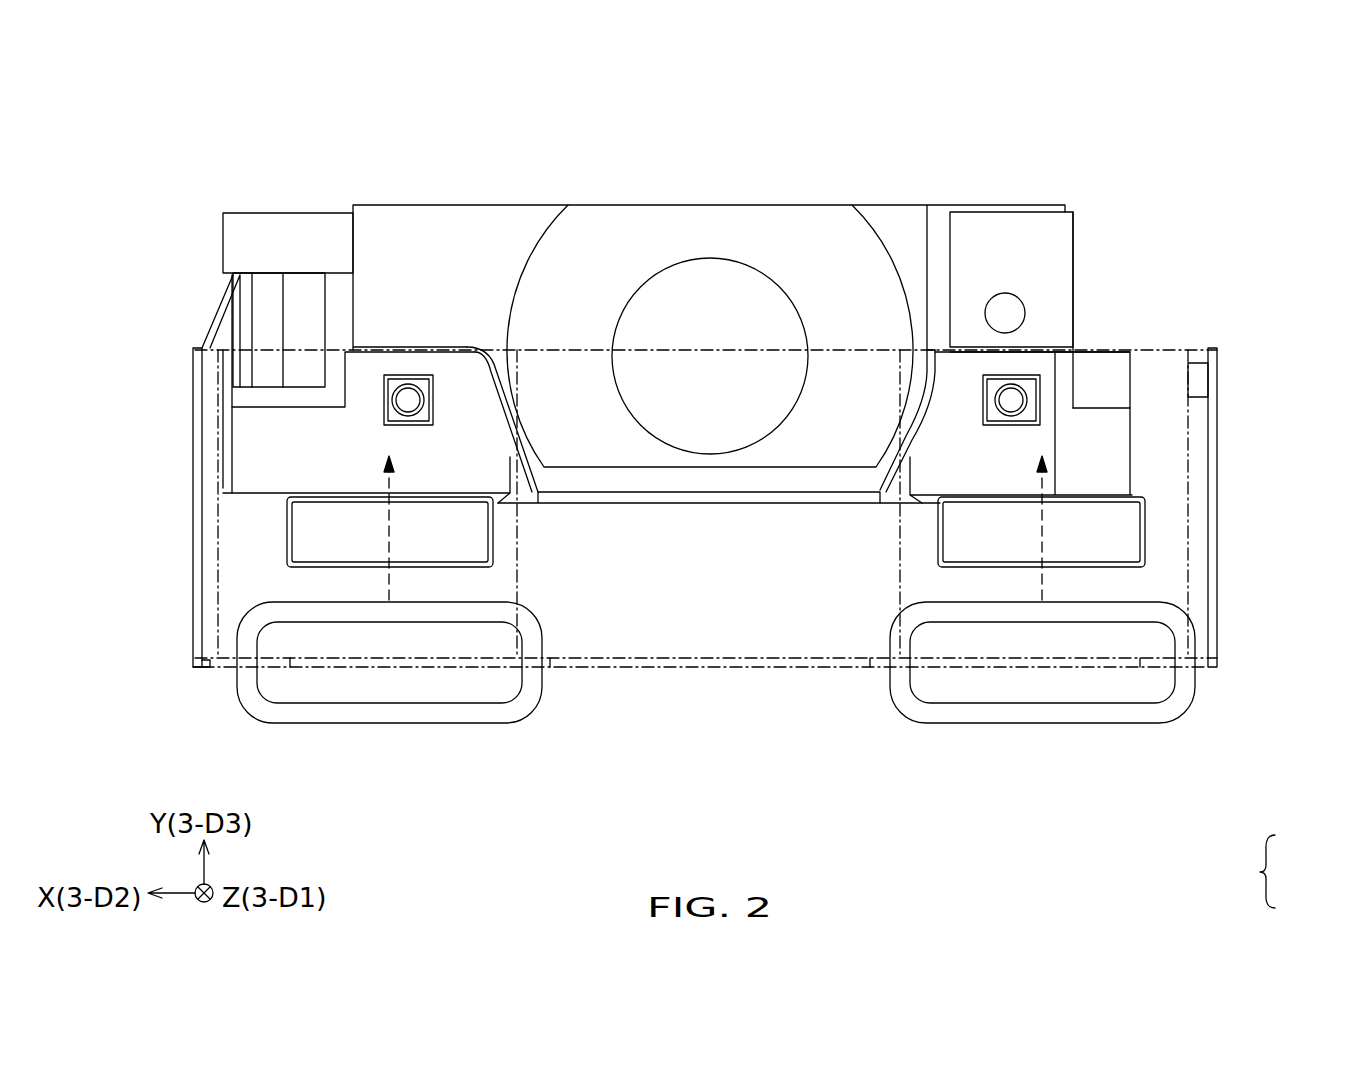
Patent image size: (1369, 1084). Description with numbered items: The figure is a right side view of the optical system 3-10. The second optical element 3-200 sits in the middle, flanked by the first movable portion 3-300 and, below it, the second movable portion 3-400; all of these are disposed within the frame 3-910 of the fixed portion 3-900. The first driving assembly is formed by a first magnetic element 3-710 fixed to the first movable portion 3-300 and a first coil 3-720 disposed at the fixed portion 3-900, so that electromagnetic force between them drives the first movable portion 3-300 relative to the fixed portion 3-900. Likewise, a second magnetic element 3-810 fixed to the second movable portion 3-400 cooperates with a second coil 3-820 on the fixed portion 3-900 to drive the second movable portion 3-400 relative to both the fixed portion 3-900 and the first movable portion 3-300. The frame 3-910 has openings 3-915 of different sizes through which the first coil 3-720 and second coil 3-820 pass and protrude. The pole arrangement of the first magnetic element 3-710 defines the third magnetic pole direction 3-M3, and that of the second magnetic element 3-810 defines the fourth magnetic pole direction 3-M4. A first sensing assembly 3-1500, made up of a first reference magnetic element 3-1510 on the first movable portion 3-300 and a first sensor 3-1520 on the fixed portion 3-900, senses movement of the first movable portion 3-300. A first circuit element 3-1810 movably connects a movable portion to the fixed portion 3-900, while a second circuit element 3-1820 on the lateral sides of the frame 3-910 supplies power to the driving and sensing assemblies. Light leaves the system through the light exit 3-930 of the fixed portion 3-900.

The optical system 3-10 is at (110, 110).
The second optical element 3-200 is at (442, 222).
The first movable portion 3-300 is at (288, 228).
The first circuit element 3-1810 is at (243, 322).
The first reference magnetic element 3-1510 is at (1105, 370).
The first sensor 3-1520 is at (1200, 378).
The first sensing assembly 3-1500 is at (1265, 871).
The second movable portion 3-400 is at (298, 447).
The second circuit element 3-1820 is at (207, 520).
The second magnetic element 3-810 is at (308, 530).
The first magnetic element 3-710 is at (1100, 530).
The fourth magnetic pole direction 3-M4 is at (390, 517).
The third magnetic pole direction 3-M3 is at (1040, 514).
The fixed portion 3-900 is at (755, 685).
The light exit 3-930 is at (660, 665).
The frame 3-910 is at (200, 690).
The openings 3-915 is at (290, 667).
The second coil 3-820 is at (390, 716).
The first coil 3-720 is at (1040, 716).